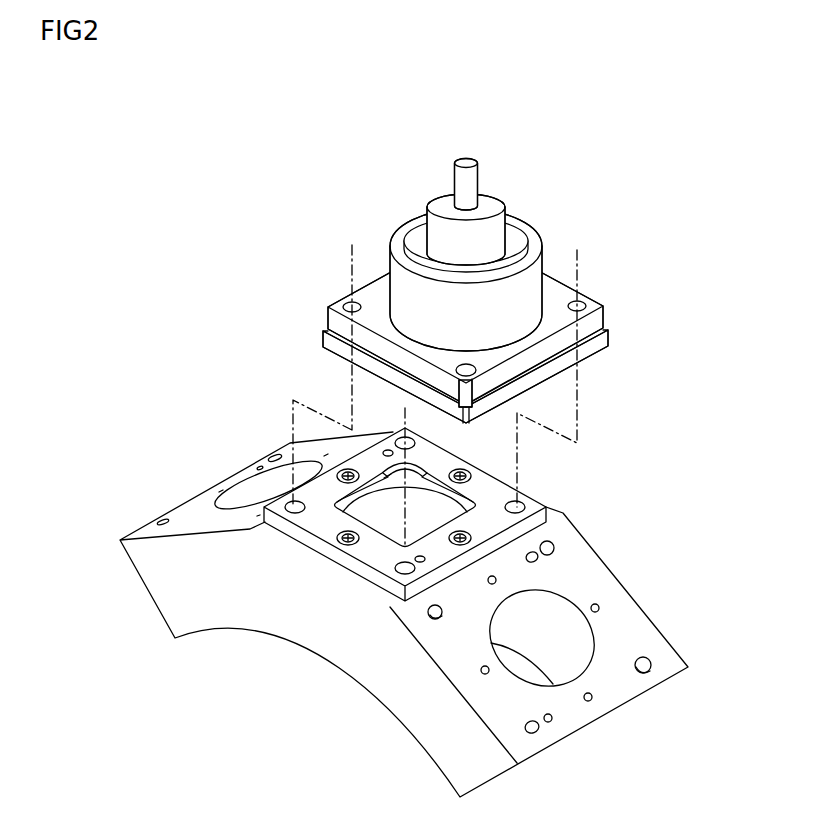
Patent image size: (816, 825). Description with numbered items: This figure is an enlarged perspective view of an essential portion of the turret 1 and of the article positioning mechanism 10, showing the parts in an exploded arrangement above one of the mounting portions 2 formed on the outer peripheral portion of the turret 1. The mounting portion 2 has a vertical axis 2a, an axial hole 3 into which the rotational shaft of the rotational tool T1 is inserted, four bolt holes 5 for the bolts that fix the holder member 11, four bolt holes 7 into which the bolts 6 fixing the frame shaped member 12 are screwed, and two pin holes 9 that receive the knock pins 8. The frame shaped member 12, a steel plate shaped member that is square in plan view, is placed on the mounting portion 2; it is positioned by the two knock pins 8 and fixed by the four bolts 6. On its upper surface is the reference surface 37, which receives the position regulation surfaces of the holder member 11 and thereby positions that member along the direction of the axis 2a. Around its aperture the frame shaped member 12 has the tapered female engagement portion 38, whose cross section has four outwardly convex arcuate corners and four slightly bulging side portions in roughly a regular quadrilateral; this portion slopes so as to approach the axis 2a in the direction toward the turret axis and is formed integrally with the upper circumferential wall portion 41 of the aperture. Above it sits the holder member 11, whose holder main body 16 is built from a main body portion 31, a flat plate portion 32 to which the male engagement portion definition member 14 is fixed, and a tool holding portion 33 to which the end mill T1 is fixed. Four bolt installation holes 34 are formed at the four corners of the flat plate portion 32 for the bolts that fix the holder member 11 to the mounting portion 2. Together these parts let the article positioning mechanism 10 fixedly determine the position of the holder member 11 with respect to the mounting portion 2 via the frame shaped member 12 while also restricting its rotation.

The turret 1 is at (649, 144).
The article positioning mechanism 10 is at (610, 168).
The holder member 11 is at (564, 204).
The male engagement portion definition member 14 is at (613, 328).
The holder main body 16 is at (512, 208).
The main body portion 31 is at (537, 277).
The flat plate portion 32 is at (598, 300).
The tool holding portion 33 is at (432, 207).
The bolt installation holes 34 is at (360, 304).
The rotational tool (end mill) T1 is at (468, 158).
The mounting portions 2 is at (190, 503).
The vertical axis 2a is at (408, 513).
The axial hole 3 is at (234, 490).
The bolt holes 5 is at (152, 519).
The bolt holes 7 is at (207, 522).
The pin holes 9 is at (261, 466).
The frame shaped member 12 is at (543, 485).
The reference surface 37 is at (378, 564).
The tapered female engagement portion 38 is at (384, 486).
The upper circumferential wall portion 41 is at (455, 497).
The bolts 6 is at (340, 541).
The knock pins 8 is at (387, 450).